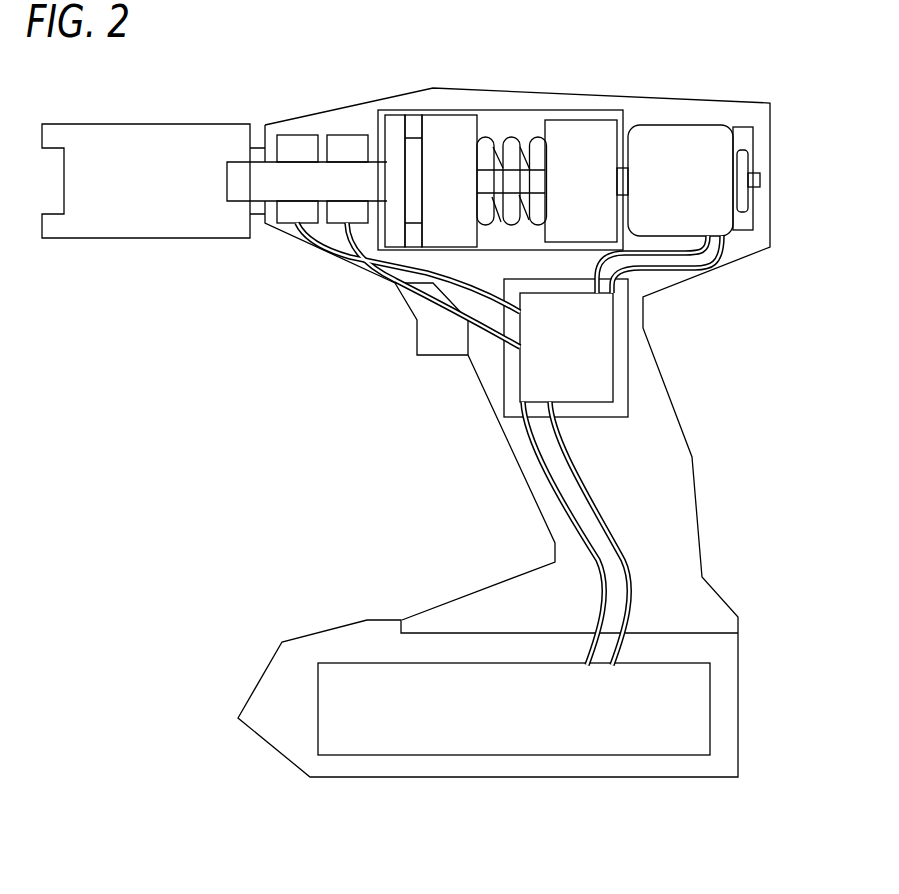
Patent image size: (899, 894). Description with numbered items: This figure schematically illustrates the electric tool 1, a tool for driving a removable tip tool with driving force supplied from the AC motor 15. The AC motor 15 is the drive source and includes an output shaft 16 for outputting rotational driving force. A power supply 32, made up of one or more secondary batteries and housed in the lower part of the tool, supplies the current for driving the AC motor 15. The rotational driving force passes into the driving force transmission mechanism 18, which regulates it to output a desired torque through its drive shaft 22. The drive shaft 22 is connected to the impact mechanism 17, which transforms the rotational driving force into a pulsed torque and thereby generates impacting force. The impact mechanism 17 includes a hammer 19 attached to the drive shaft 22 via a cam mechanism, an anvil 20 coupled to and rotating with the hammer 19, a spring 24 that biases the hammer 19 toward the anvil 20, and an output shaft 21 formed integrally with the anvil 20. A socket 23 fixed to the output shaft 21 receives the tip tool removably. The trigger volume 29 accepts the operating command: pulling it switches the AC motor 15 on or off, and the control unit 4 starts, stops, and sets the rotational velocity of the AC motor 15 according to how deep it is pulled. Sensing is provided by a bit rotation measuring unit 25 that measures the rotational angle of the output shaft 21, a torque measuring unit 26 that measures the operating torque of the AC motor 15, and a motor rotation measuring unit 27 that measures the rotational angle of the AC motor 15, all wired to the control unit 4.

The electric tool 1 is at (778, 92).
The control unit 4 is at (615, 365).
The AC motor 15 is at (687, 125).
The output shaft 16 is at (622, 181).
The impact mechanism 17 is at (486, 118).
The driving force transmission mechanism 18 is at (592, 120).
The hammer 19 is at (442, 128).
The anvil 20 is at (398, 128).
The output shaft 21 is at (273, 160).
The drive shaft 22 is at (525, 182).
The socket 23 is at (89, 143).
The spring 24 is at (512, 140).
The bit rotation measuring unit 25 is at (291, 213).
The torque measuring unit 26 is at (338, 212).
The motor rotation measuring unit 27 is at (750, 218).
The trigger volume 29 is at (440, 356).
The power supply 32 is at (710, 708).